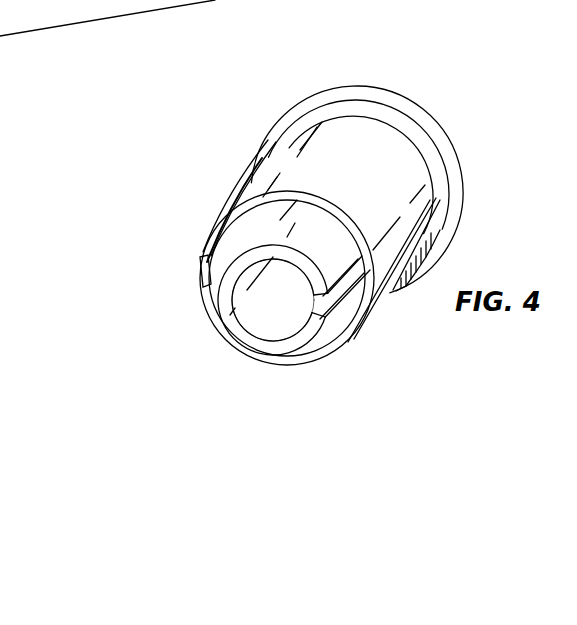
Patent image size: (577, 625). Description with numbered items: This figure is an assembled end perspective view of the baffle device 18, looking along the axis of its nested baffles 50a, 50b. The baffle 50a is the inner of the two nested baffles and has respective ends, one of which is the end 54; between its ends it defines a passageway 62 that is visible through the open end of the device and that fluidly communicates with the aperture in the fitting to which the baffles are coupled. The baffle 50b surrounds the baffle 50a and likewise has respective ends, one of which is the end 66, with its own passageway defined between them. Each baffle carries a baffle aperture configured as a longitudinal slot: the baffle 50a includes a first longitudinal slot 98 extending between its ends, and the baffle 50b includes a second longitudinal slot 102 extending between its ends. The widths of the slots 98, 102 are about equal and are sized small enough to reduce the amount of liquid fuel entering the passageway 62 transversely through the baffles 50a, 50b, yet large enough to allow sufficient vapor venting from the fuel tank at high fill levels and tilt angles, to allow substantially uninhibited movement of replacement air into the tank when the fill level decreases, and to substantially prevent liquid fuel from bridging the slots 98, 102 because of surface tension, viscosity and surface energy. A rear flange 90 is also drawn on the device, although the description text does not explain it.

The baffle device 18 is at (486, 114).
The rear flange 90 is at (380, 93).
The baffle 50a is at (277, 228).
The baffle 50b is at (420, 210).
The end 66 is at (330, 353).
The longitudinal slot 102 is at (205, 275).
The end 54 is at (213, 308).
The passageway 62 is at (255, 325).
The longitudinal slot 98 is at (328, 307).